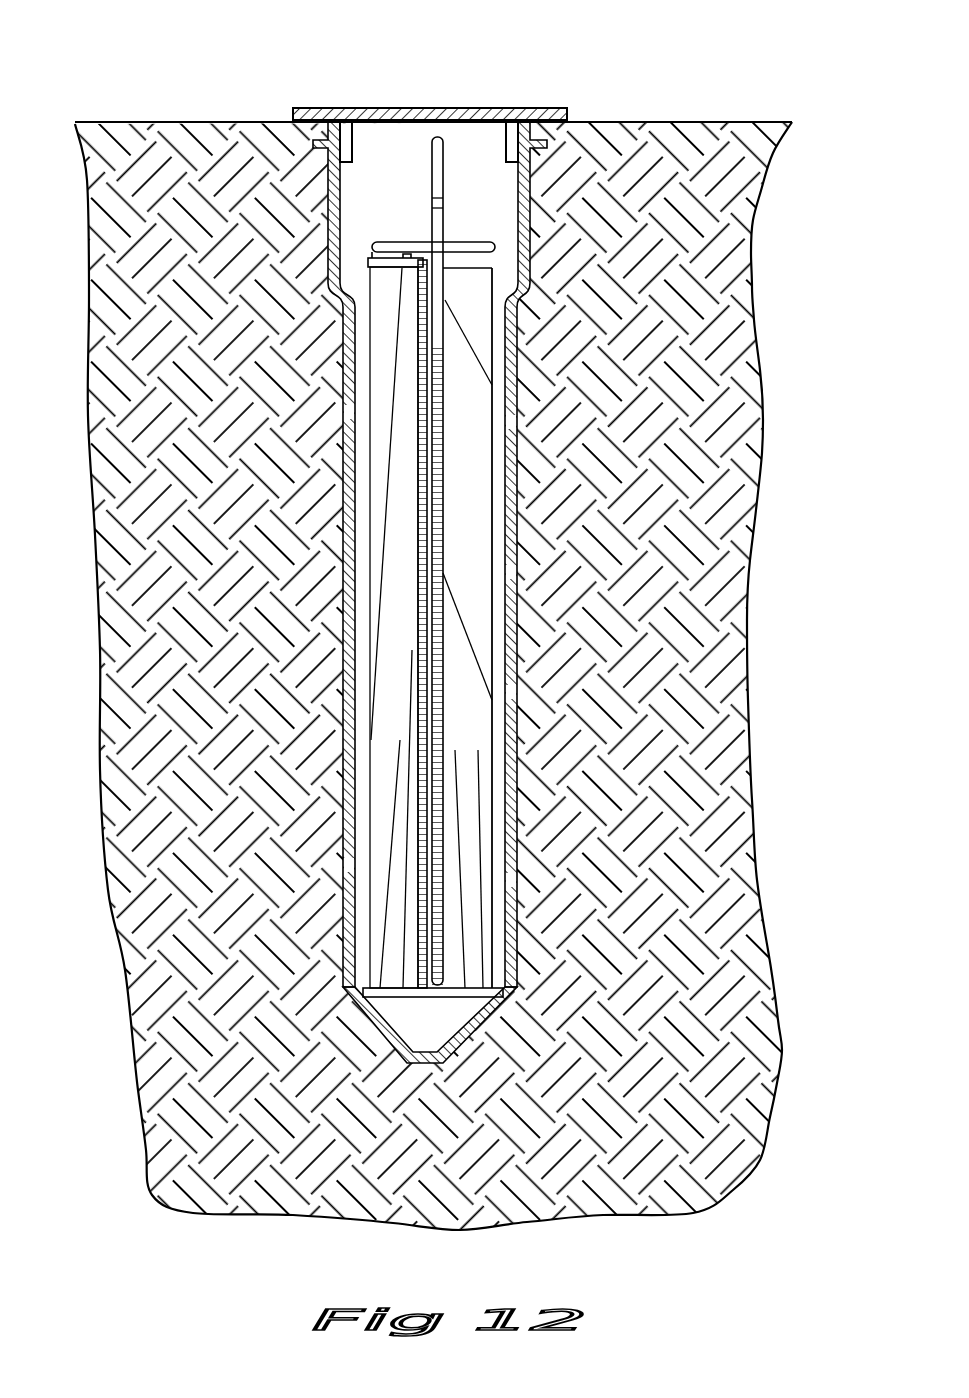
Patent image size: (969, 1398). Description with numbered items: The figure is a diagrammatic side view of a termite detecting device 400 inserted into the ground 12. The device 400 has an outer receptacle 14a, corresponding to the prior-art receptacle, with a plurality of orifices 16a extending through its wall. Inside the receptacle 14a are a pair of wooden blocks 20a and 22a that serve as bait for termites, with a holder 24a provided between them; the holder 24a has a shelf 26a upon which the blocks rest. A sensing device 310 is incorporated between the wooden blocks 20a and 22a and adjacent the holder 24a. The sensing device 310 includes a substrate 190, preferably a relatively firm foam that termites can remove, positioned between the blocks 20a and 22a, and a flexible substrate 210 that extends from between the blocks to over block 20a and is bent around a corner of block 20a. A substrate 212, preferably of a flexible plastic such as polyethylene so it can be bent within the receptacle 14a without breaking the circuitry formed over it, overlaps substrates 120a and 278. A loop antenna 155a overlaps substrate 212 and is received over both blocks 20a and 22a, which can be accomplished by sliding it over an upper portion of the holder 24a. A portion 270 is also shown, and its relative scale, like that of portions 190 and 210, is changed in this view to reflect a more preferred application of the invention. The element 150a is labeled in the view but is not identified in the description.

The termite detecting device 400 is at (296, 48).
The ground 12 is at (716, 160).
The receptacle 14a is at (535, 188).
The orifices 16a is at (533, 419).
The wooden block 22a is at (483, 287).
The holder 24a is at (437, 490).
The shelf 26a is at (395, 1046).
The loop antenna 155a is at (428, 199).
The substrate 212 is at (425, 277).
The portion 270 is at (360, 238).
The top plate 150a is at (368, 259).
The substrate 278 is at (423, 277).
The flexible substrate 210 is at (398, 380).
The wooden block 20a is at (380, 510).
The substrate 120a is at (418, 566).
The substrate 190 is at (396, 602).
The sensing device 310 is at (380, 791).